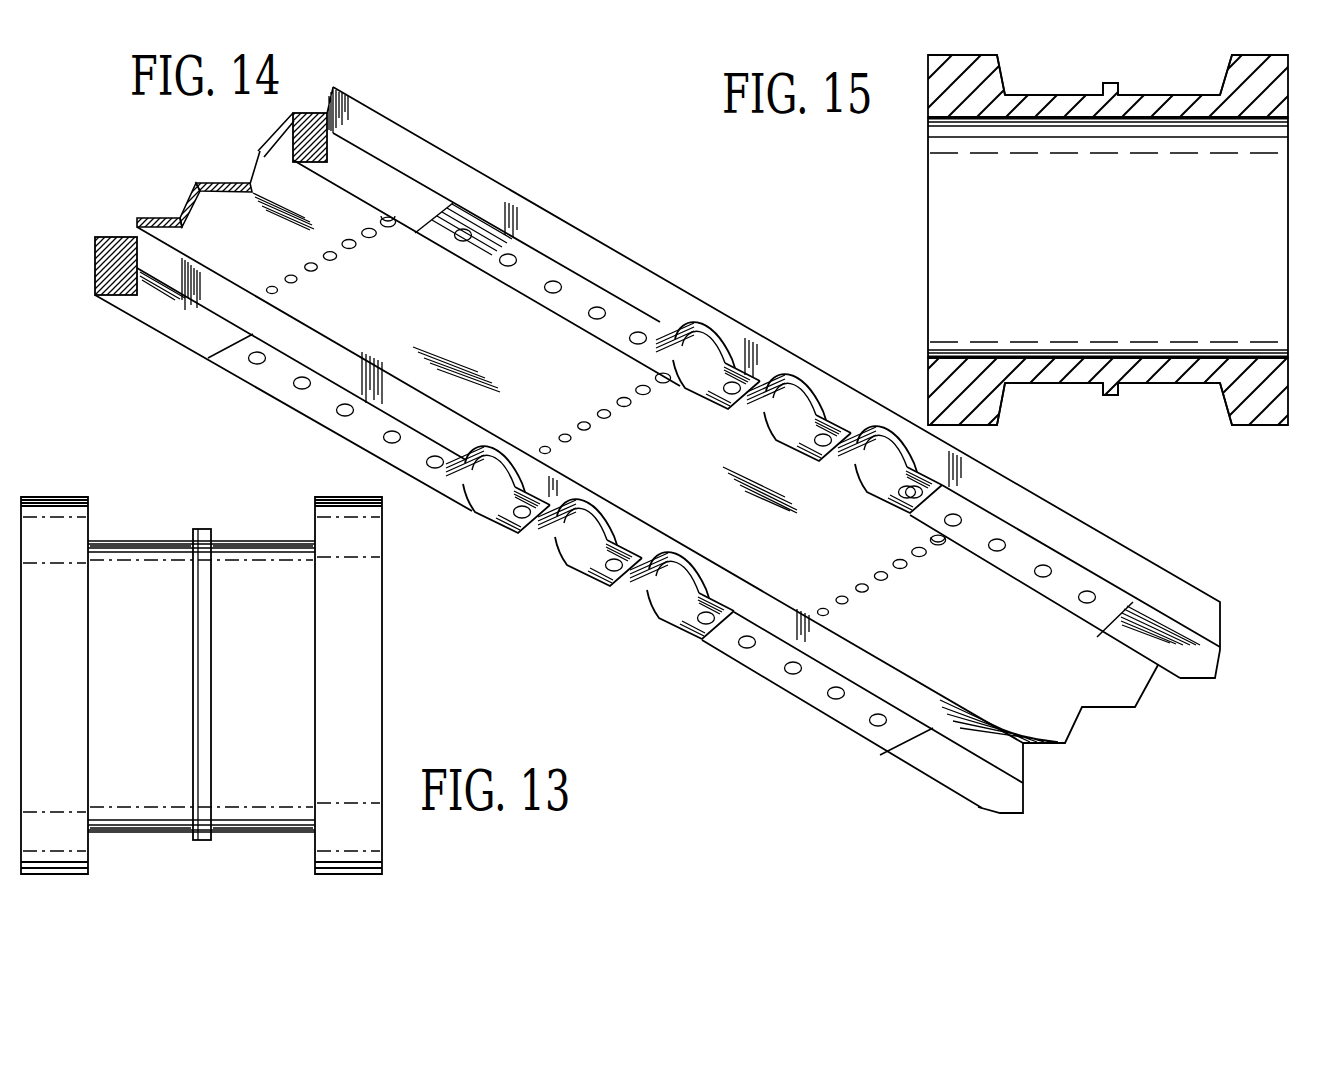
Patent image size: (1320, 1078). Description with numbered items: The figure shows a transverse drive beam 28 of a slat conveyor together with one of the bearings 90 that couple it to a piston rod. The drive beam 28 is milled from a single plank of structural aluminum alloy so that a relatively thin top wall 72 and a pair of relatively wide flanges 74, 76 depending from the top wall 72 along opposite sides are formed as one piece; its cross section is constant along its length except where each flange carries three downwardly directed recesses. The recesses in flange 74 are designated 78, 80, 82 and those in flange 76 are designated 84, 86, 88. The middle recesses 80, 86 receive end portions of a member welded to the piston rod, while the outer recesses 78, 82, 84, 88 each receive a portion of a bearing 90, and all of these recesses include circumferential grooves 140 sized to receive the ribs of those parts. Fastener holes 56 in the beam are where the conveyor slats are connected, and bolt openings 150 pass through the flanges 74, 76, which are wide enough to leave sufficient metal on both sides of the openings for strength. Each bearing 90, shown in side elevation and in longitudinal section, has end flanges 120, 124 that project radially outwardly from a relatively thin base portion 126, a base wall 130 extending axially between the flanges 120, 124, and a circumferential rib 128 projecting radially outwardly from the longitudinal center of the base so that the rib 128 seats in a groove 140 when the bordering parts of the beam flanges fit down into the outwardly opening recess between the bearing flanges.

In FIG. 14, the drive beam 28 is at (437, 308).
In FIG. 14, the fastener holes 56 is at (310, 262).
In FIG. 14, the top wall 72 is at (215, 198).
In FIG. 14, the flange 74 is at (398, 183).
In FIG. 14, the flange 76 is at (166, 318).
In FIG. 14, the recess 78 is at (703, 348).
In FIG. 14, the recess 80 is at (790, 398).
In FIG. 14, the recess 82 is at (872, 445).
In FIG. 14, the recess 84 is at (475, 489).
In FIG. 14, the recess 86 is at (566, 538).
In FIG. 14, the recess 88 is at (644, 588).
In FIG. 13, the bearing 90 is at (400, 706).
In FIG. 15, the bearing 90 is at (915, 137).
In FIG. 13, the end flange 120 is at (78, 524).
In FIG. 15, the end flange 120 is at (965, 60).
In FIG. 13, the end flange 124 is at (325, 507).
In FIG. 15, the end flange 124 is at (1247, 58).
In FIG. 13, the base portion 126 is at (151, 813).
In FIG. 15, the base portion 126 is at (1075, 384).
In FIG. 13, the circumferential rib 128 is at (200, 528).
In FIG. 15, the circumferential rib 128 is at (1108, 83).
In FIG. 15, the base wall 130 is at (1050, 94).
In FIG. 14, the circumferential grooves 140 is at (478, 468).
In FIG. 14, the bolt openings 150 is at (304, 377).